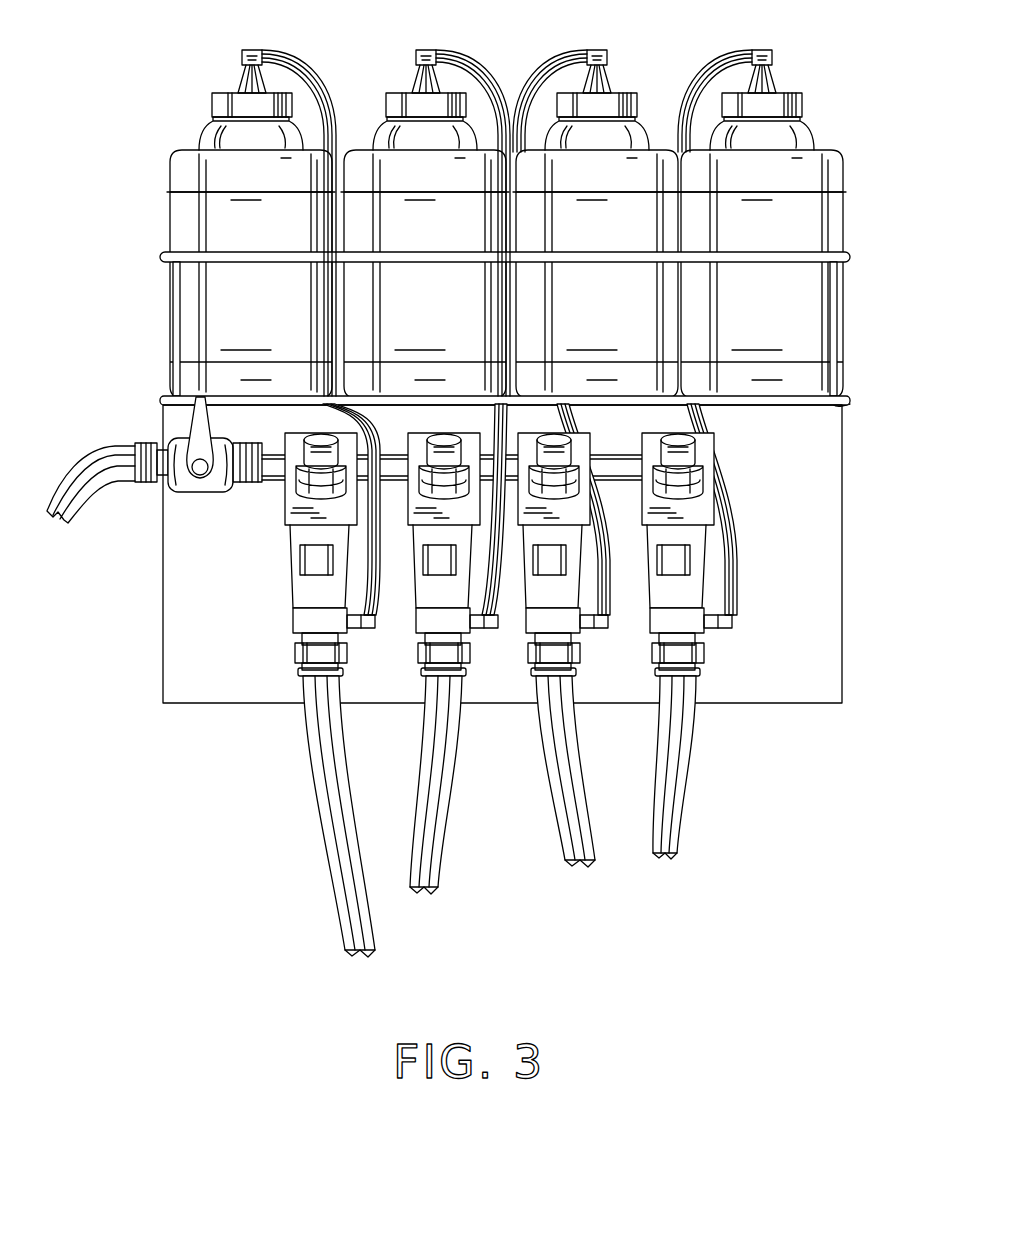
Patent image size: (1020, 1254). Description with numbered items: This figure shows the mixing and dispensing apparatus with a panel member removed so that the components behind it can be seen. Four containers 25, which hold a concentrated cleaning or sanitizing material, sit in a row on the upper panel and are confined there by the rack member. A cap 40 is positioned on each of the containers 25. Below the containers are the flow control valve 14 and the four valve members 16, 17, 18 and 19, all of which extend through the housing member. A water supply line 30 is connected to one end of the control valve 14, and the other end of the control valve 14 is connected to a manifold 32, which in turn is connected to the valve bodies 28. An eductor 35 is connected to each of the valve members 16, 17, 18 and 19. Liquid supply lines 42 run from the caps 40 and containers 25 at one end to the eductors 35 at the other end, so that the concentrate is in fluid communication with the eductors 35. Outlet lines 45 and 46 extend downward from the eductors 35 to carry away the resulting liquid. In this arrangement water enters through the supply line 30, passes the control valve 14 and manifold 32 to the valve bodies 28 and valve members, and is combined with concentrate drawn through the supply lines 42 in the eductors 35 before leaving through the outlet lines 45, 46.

The flow control valve 14 is at (183, 494).
The valve member 16 is at (306, 446).
The valve member 17 is at (442, 447).
The valve member 18 is at (565, 446).
The valve member 19 is at (683, 446).
The container 25 is at (273, 311).
The valve body 28 is at (300, 513).
The water supply line 30 is at (88, 458).
The manifold 32 is at (273, 481).
The eductor 35 is at (302, 597).
The cap 40 is at (214, 94).
The liquid supply line 42 is at (295, 66).
The outlet line 45 is at (327, 790).
The outlet line 46 is at (433, 788).